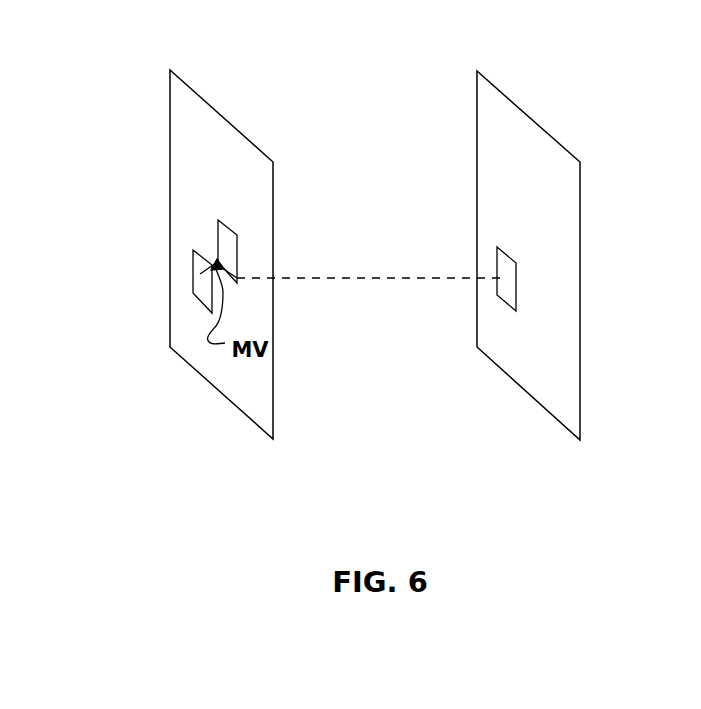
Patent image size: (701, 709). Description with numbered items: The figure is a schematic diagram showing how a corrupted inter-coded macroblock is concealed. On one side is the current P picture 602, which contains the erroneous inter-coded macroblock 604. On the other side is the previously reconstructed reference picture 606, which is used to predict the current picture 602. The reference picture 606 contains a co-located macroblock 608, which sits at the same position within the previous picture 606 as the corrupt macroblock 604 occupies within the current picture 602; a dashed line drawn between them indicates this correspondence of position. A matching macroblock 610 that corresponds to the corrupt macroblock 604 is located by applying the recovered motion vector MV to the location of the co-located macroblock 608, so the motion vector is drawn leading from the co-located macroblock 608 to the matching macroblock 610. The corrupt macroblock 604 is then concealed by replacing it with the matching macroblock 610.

The P picture 602 is at (477, 210).
The inter-coded macroblock 604 is at (501, 292).
The previously reconstructed reference picture 606 is at (170, 208).
The co-located macroblock 608 is at (202, 295).
The matching macroblock 610 is at (222, 238).